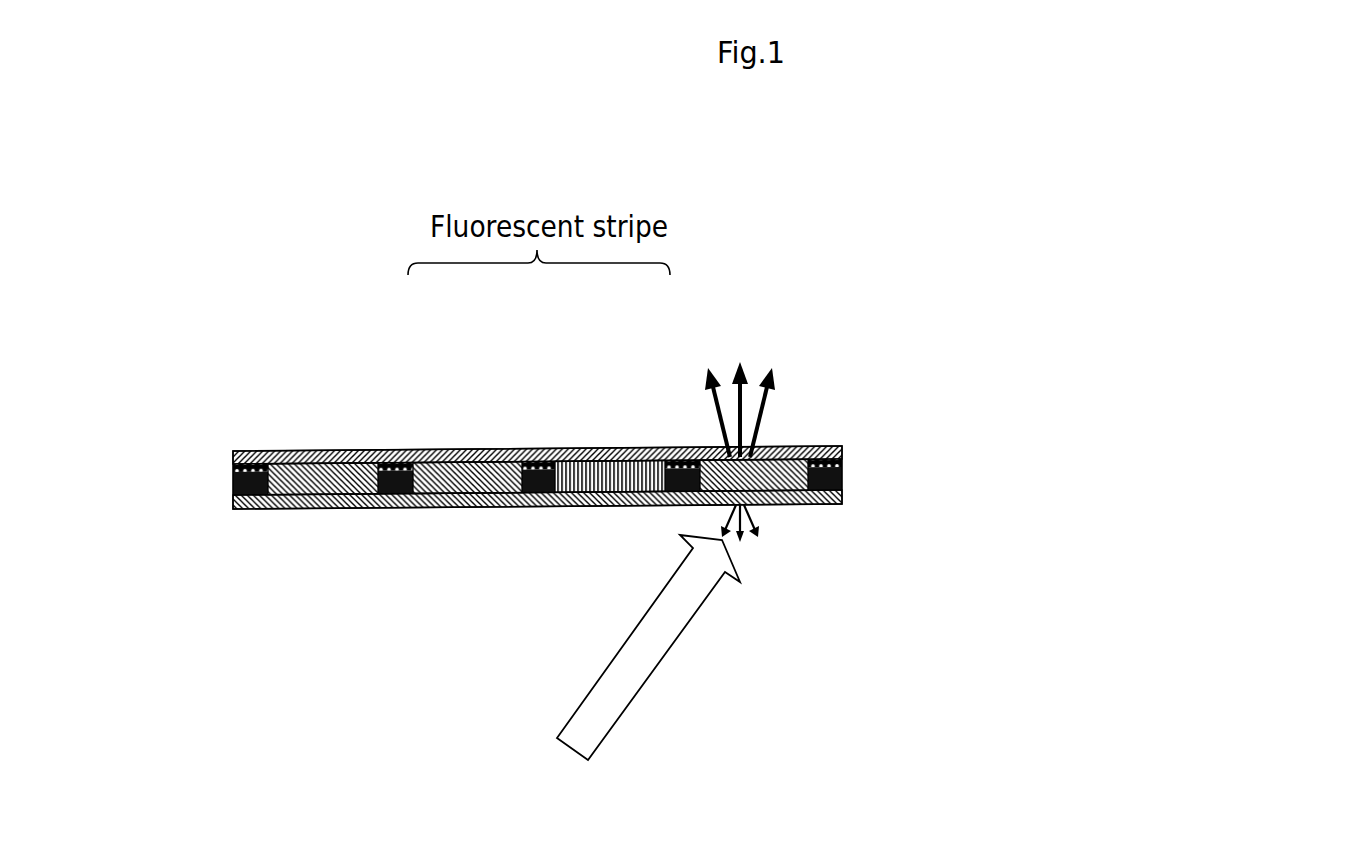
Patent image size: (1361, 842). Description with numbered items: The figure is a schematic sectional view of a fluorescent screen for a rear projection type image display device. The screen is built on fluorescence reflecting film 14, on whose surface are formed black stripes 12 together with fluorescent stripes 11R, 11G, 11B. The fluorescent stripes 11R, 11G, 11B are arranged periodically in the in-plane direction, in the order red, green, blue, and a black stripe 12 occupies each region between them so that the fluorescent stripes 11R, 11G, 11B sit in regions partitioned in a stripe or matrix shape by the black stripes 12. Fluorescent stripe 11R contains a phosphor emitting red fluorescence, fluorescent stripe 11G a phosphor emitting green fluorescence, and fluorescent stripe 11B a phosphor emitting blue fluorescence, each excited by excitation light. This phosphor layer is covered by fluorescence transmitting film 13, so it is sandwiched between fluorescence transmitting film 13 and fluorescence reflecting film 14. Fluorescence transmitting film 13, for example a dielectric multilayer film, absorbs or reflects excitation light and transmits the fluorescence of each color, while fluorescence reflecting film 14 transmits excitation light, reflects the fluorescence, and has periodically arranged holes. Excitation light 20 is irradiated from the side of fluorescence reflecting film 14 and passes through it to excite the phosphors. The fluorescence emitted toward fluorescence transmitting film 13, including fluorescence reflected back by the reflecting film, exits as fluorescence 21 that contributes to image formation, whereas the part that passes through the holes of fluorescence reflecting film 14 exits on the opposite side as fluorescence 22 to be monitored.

The fluorescent stripe 11R is at (315, 466).
The fluorescent stripe 11G is at (443, 466).
The fluorescent stripe 11B is at (582, 462).
The black stripe 12 is at (233, 488).
The fluorescence transmitting film 13 is at (810, 445).
The fluorescence reflecting film 14 is at (310, 503).
The excitation light 20 is at (681, 633).
The fluorescence 21 is at (745, 357).
The fluorescence to be monitored 22 is at (765, 533).